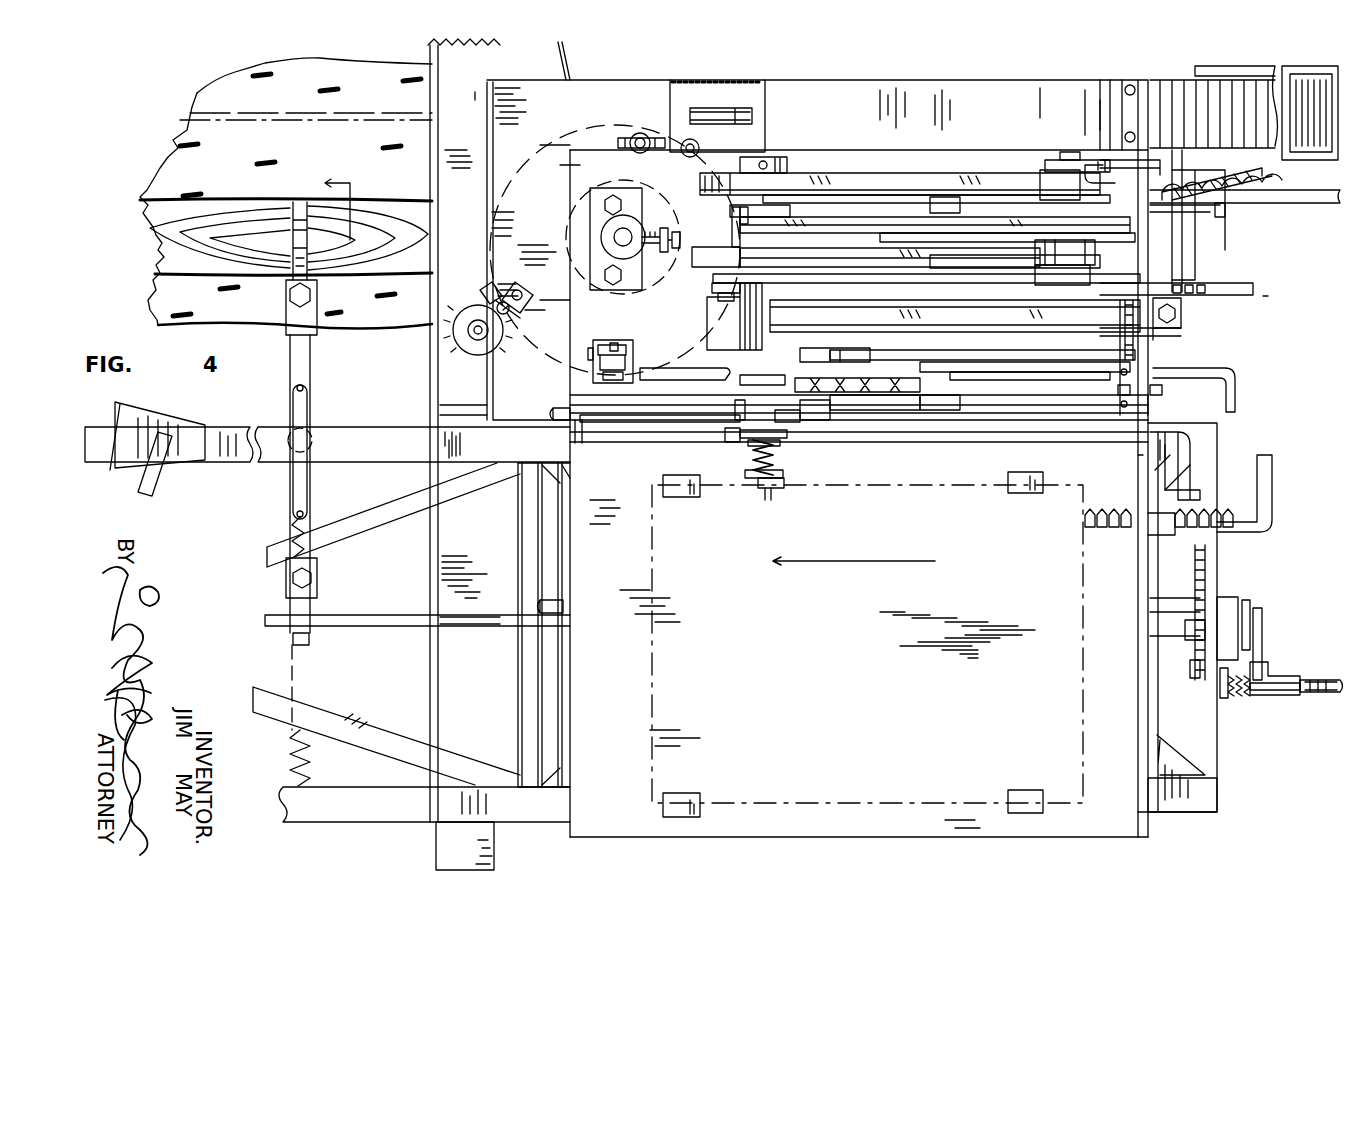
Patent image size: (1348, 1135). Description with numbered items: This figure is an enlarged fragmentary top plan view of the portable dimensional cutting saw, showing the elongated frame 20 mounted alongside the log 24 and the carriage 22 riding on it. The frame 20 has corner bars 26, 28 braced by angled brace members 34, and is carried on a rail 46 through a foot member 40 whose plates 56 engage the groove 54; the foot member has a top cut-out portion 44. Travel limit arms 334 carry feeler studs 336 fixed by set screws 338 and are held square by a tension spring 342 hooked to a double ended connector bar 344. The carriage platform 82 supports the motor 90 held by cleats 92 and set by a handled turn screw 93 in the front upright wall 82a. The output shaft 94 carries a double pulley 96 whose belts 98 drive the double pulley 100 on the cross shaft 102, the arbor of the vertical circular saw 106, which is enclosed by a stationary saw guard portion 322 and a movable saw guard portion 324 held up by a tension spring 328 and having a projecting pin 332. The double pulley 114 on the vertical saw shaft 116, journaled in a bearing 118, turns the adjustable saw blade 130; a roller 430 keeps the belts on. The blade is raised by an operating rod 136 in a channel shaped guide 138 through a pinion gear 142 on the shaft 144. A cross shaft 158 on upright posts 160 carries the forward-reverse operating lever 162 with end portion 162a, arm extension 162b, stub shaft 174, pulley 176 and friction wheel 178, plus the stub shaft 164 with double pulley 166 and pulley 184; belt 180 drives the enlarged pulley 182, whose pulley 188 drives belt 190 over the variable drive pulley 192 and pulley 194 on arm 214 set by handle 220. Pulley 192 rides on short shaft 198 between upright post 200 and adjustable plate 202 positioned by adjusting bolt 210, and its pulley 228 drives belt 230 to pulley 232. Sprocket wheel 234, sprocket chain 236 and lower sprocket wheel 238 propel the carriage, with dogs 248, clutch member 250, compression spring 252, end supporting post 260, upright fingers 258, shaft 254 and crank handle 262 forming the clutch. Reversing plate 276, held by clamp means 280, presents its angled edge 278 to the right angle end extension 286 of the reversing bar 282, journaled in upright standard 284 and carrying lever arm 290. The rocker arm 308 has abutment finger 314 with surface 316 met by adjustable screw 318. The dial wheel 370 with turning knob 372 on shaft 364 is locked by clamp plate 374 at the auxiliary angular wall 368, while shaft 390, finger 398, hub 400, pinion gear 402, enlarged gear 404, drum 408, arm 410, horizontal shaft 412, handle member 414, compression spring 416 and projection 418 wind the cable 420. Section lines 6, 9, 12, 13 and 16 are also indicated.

The log 24 is at (217, 88).
The feeler stud 336 is at (302, 212).
The set screw 338 is at (306, 303).
The arm 334 is at (292, 366).
The double ended connector bar 344 is at (296, 491).
The tension spring 342 is at (294, 524).
The corner bar 28 is at (232, 436).
The reversing plate 276 is at (178, 430).
The angled edge 278 is at (160, 412).
The clamp means 280 is at (160, 490).
The section line 9 is at (395, 100).
The rail 46 is at (496, 55).
The plate 56 is at (436, 586).
The corner bar 26 is at (345, 810).
The angled brace member 34 is at (385, 510).
The foot member 40 is at (455, 668).
The shaft 390 is at (403, 628).
The section line 13 is at (328, 687).
The drum 408 is at (563, 610).
The auxiliary angular wall 368 is at (578, 100).
The cable 420 is at (565, 50).
The circular saw 106 is at (742, 108).
The section line 16 is at (484, 84).
The stationary saw guard portion 322 is at (890, 92).
The movable saw guard portion 324 is at (1228, 66).
The tension spring 328 is at (1265, 175).
The handle 220 is at (1293, 205).
The projecting pin 332 is at (1226, 210).
The variable drive pulley 192 is at (1130, 218).
The rocker arm 308 is at (1178, 256).
The forward-reverse operating lever 162 is at (1240, 295).
The section line 6 is at (1268, 297).
The adjustable screw 318 is at (1170, 311).
The abutment surface 316 is at (1165, 328).
The belt 98 is at (1140, 333).
The shaft 144 is at (1215, 368).
The abutment finger 314 is at (1155, 378).
The section line 12 is at (1144, 252).
The pulley 232 is at (838, 180).
The belt 230 is at (895, 190).
The pulley 228 is at (1040, 180).
The adjustable plate 202 is at (1045, 165).
The short shaft 198 is at (1065, 152).
The adjusting bolt 210 is at (1128, 168).
The cross shaft 158 is at (762, 157).
The arm 214 is at (932, 205).
The upright post 160 is at (775, 212).
The pulley 194 is at (880, 217).
The pulley 188 is at (732, 218).
The belt 190 is at (740, 222).
The pulley 176 is at (700, 252).
The enlarged pulley 182 is at (815, 252).
The belt 180 is at (870, 262).
The pulley 184 is at (1035, 252).
The upright post 200 is at (1035, 273).
The stub shaft 164 is at (960, 290).
The double pulley 166 is at (958, 360).
The double pulley 100 is at (1040, 362).
The cross shaft 102 is at (1068, 366).
The lever arm 290 is at (1115, 385).
The double pulley 96 is at (860, 362).
The stub shaft 174 is at (715, 320).
The arm extension 162b is at (718, 293).
The end portion 162a is at (730, 300).
The friction wheel 178 is at (720, 355).
The pinion gear 142 is at (612, 378).
The channel shaped guide 138 is at (608, 346).
The operating rod 136 is at (614, 345).
The double pulley 114 is at (590, 228).
The vertical saw shaft 116 is at (616, 239).
The bearing 118 is at (600, 285).
The saw blade 130 is at (625, 110).
The roller 430 is at (645, 130).
The dial wheel 370 is at (455, 345).
The turning knob 372 is at (458, 355).
The shaft 364 is at (455, 330).
The clamp plate 374 is at (490, 300).
The top cut-out portion 44 is at (440, 404).
The groove 54 is at (440, 415).
The horizontal platform 82 is at (836, 822).
The motor 90 is at (740, 810).
The cleat 92 is at (1028, 493).
The shaft 254 is at (1048, 432).
The upright standard 284 is at (573, 430).
The right angle end extension 286 is at (553, 412).
The reversing bar 282 is at (662, 422).
The dog 248 is at (725, 434).
The clutch member 250 is at (740, 445).
The upright finger 258 is at (752, 452).
The end supporting post 260 is at (753, 472).
The compression spring 252 is at (770, 480).
The sprocket wheel 234 is at (790, 420).
The output shaft 94 is at (825, 400).
The sprocket chain 236 is at (870, 410).
The lower sprocket wheel 238 is at (925, 410).
The front upright wall 82a is at (1158, 712).
The crank handle 262 is at (1175, 448).
The handled turn screw 93 is at (1273, 492).
The hub 400 is at (1228, 610).
The right angle finger 398 is at (1255, 622).
The projection 418 is at (1262, 664).
The horizontal shaft 412 is at (1310, 682).
The handle member 414 is at (1285, 695).
The compression spring 416 is at (1243, 695).
The arm 410 is at (1225, 698).
The pinion gear 402 is at (1192, 640).
The enlarged gear 404 is at (1196, 678).
The frame 20 is at (1228, 799).
The carriage 22 is at (1166, 836).